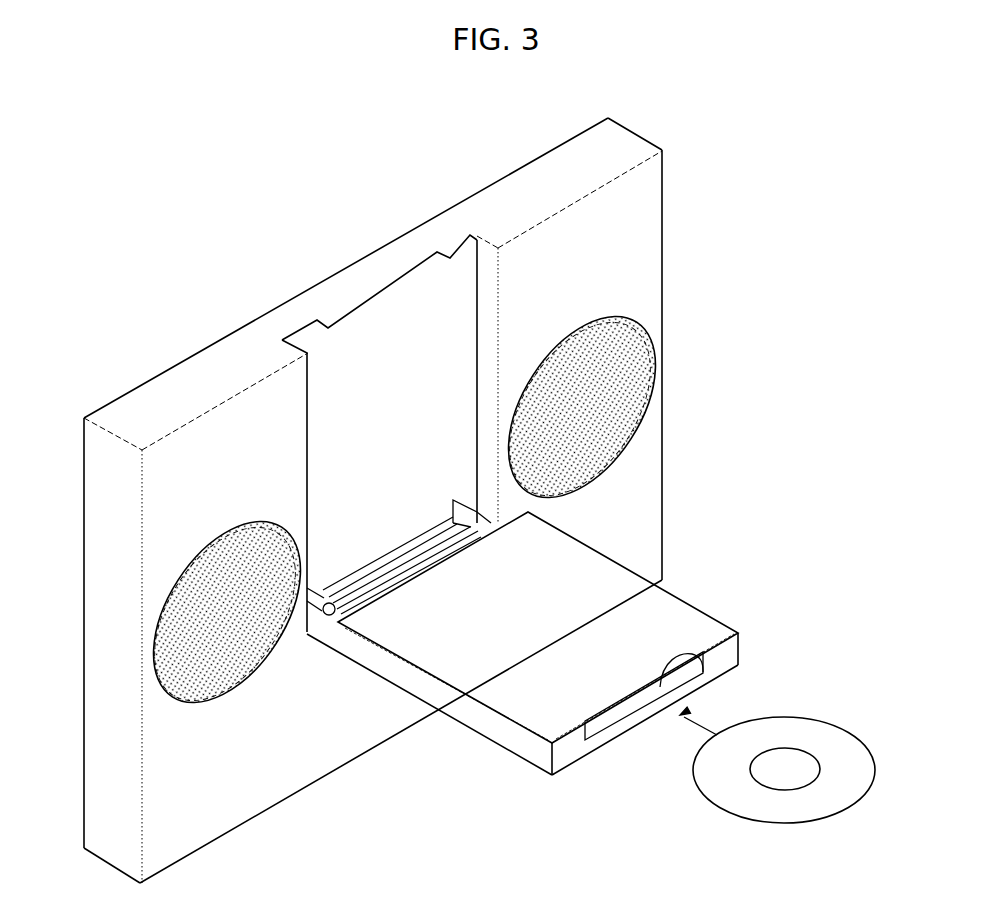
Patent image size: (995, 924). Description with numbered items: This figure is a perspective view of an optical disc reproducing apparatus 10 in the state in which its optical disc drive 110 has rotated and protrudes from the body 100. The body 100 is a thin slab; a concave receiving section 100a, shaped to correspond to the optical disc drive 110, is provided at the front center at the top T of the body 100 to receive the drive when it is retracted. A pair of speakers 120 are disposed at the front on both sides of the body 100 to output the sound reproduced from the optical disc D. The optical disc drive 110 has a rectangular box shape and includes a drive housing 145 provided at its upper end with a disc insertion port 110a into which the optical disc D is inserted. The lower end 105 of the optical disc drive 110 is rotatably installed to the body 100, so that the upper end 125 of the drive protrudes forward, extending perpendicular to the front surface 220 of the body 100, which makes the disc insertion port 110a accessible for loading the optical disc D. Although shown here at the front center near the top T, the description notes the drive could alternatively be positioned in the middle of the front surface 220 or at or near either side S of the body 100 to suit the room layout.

The optical disc reproducing apparatus 10 is at (214, 226).
The top of the body T is at (167, 393).
The side of the body S is at (110, 612).
The body 100 is at (634, 229).
The concave receiving section 100a is at (410, 337).
The speakers 120 is at (641, 384).
The lower end of the optical disc drive 105 is at (487, 570).
The optical disc drive 110 is at (688, 597).
The disc insertion port 110a is at (707, 663).
The optical disc D is at (845, 738).
The drive housing 145 is at (485, 728).
The upper end of the optical disc drive 125 is at (593, 692).
The front surface of the body 220 is at (253, 797).